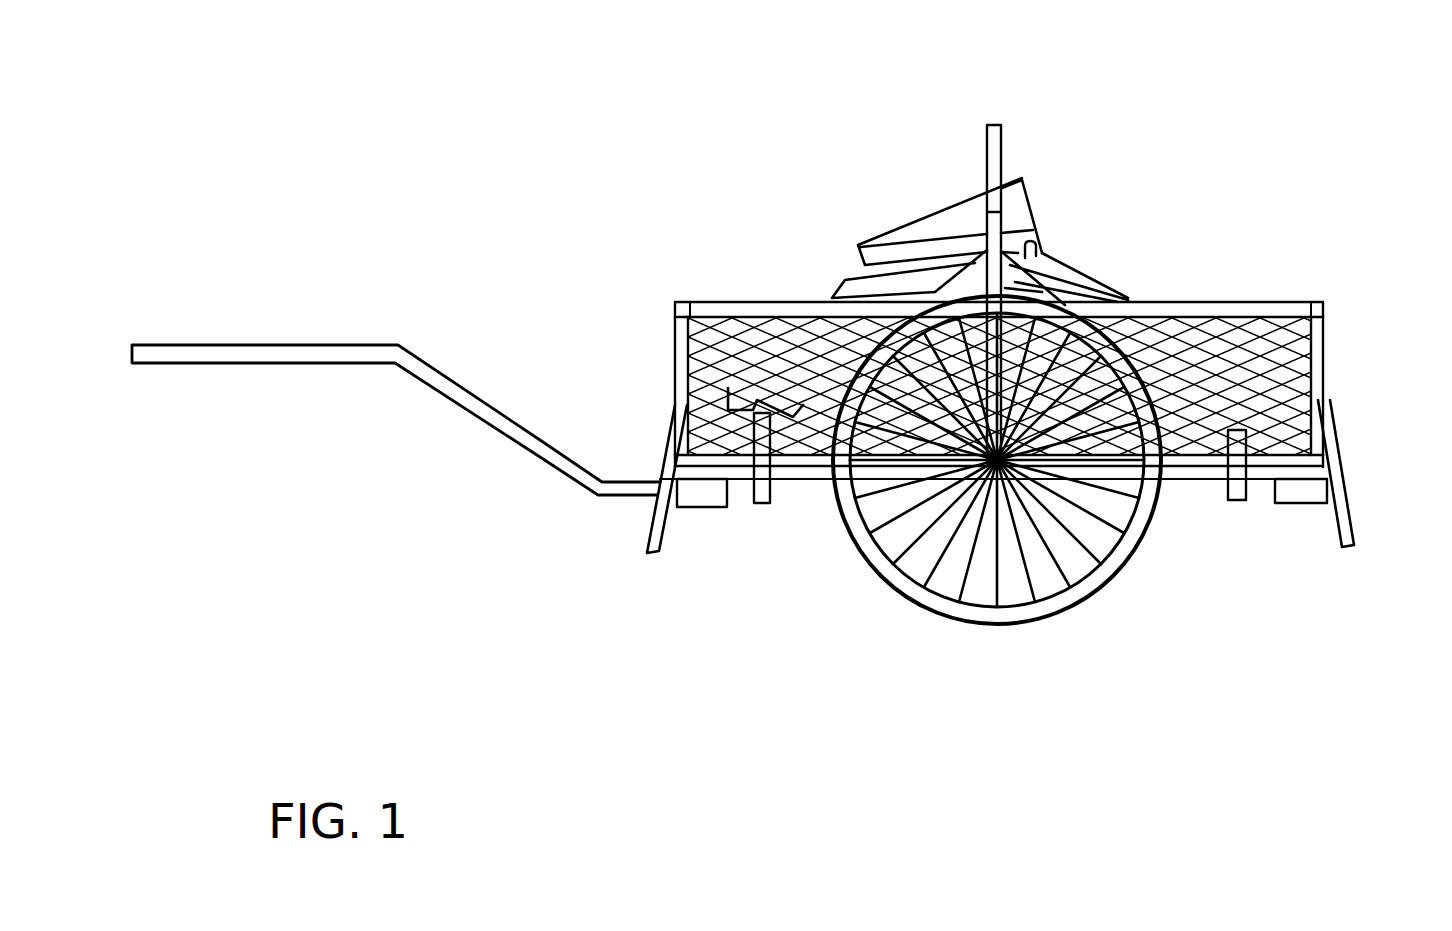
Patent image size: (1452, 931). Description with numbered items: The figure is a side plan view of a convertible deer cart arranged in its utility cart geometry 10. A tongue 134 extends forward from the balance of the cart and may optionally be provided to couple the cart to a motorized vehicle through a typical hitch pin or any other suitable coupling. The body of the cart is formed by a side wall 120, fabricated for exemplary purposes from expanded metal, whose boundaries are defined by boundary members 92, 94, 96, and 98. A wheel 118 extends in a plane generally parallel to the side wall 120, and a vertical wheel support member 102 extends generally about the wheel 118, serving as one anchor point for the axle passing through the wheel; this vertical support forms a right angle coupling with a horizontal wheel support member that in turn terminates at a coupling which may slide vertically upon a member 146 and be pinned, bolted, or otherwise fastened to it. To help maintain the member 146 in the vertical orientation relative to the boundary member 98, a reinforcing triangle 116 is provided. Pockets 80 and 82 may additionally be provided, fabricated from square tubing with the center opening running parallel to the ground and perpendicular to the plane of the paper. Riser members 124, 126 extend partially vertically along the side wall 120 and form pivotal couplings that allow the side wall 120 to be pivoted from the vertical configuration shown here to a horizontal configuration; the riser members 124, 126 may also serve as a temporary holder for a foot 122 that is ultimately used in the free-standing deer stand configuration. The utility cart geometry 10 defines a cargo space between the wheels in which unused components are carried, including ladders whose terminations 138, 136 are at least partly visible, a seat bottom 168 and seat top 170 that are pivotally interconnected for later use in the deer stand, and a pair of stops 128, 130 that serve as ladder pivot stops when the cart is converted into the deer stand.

The utility cart geometry 10 is at (398, 181).
The pocket 80 is at (1323, 302).
The pocket 82 is at (675, 310).
The boundary member 92 is at (1185, 463).
The boundary member 94 is at (683, 357).
The boundary member 96 is at (1318, 357).
The boundary member 98 is at (1203, 305).
The vertical wheel support member 102 is at (982, 226).
The reinforcing triangle 116 is at (1050, 270).
The wheel 118 is at (1054, 612).
The side wall 120 is at (1240, 337).
The foot 122 is at (758, 400).
The riser member 124 is at (766, 497).
The riser member 126 is at (1233, 487).
The stop 128 is at (1297, 495).
The stop 130 is at (693, 510).
The tongue 134 is at (457, 398).
The termination 136 is at (1342, 497).
The termination 138 is at (645, 515).
The member 146 is at (987, 162).
The seat bottom 168 is at (1085, 290).
The seat top 170 is at (1022, 208).